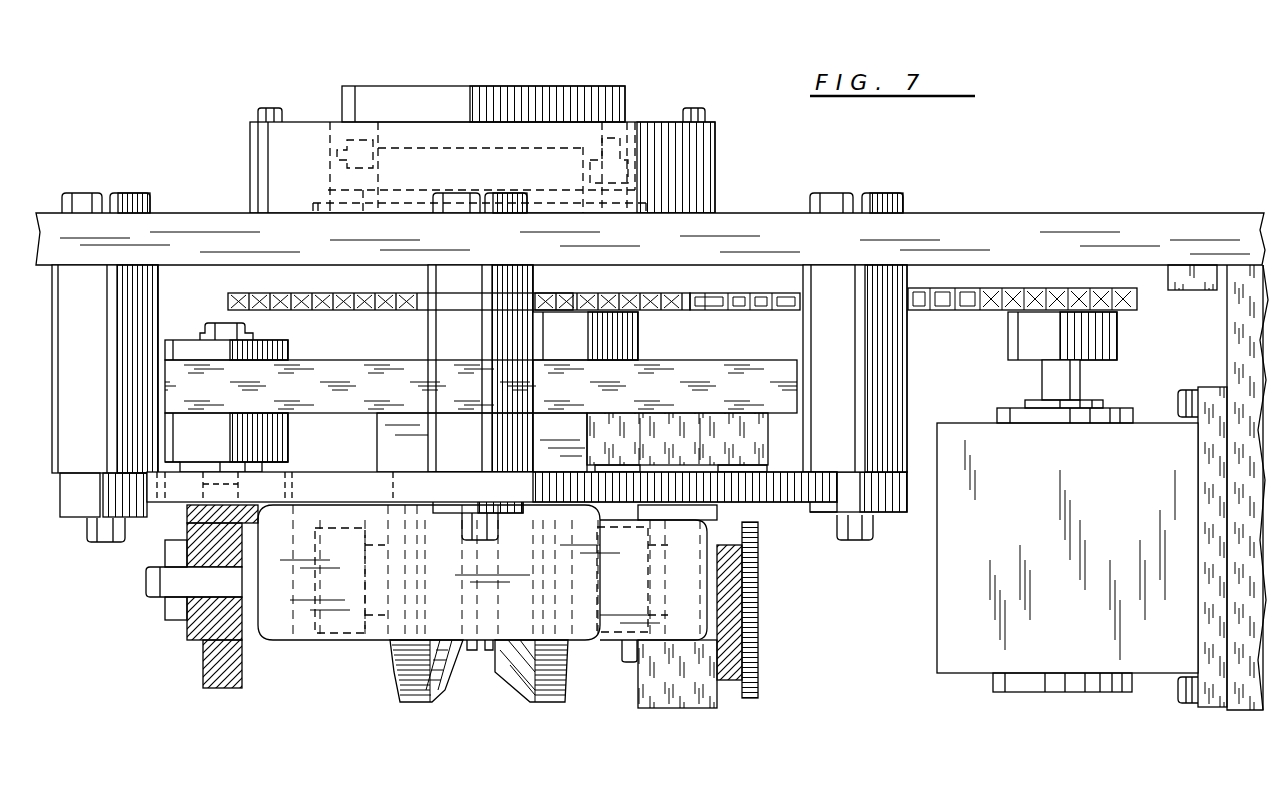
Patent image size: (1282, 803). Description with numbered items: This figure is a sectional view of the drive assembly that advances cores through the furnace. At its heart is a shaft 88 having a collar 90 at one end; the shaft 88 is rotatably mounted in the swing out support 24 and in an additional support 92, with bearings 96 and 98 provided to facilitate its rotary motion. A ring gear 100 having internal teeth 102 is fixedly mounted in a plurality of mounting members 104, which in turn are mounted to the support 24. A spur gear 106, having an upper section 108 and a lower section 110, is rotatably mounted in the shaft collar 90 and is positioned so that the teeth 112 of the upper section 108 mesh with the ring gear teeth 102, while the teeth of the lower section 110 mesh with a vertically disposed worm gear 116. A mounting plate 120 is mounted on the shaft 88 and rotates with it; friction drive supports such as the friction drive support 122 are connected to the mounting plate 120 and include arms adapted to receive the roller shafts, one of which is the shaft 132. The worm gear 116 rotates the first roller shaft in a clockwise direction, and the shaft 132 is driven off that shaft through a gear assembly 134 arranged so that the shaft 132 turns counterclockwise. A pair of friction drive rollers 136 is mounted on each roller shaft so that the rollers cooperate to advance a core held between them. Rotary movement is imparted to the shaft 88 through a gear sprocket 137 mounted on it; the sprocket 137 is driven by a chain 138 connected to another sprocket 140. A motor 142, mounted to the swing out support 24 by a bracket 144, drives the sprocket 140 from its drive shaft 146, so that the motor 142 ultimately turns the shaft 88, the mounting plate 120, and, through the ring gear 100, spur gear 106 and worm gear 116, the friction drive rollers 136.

The swing out support 24 is at (1100, 222).
The shaft 88 is at (380, 437).
The collar 90 is at (280, 506).
The additional support 92 is at (620, 340).
The bearing 96 is at (637, 238).
The bearing 98 is at (622, 140).
The ring gear 100 is at (666, 490).
The internal teeth 102 is at (786, 506).
The mounting members 104 is at (147, 317).
The spur gear 106 is at (171, 519).
The upper section 108 is at (272, 482).
The lower section 110 is at (190, 630).
The teeth 112 is at (300, 490).
The worm gear 116 is at (205, 672).
The mounting plate 120 is at (705, 366).
The friction drive support 122 is at (772, 458).
The shaft 132 is at (310, 586).
The gear assembly 134 is at (766, 601).
The friction drive rollers 136 is at (508, 680).
The gear sprocket 137 is at (622, 298).
The chain 138 is at (745, 299).
The sprocket 140 is at (1038, 297).
The motor 142 is at (940, 576).
The bracket 144 is at (1232, 348).
The drive shaft 146 is at (1076, 385).